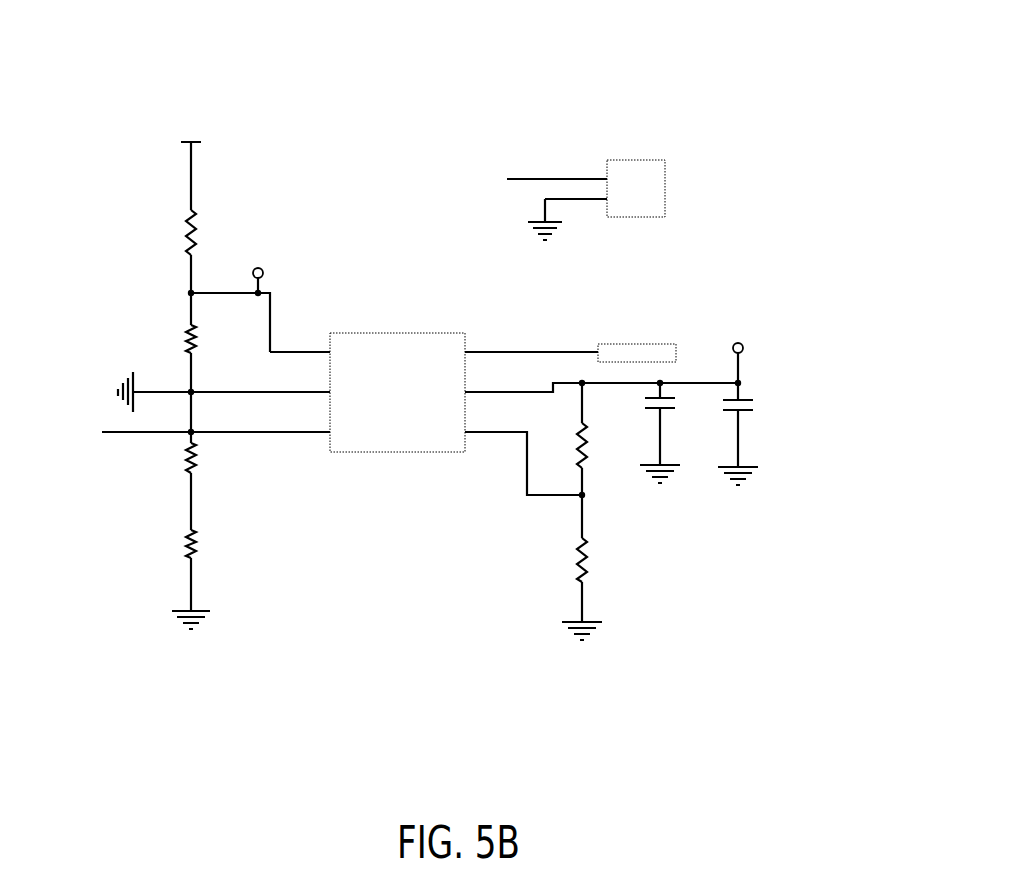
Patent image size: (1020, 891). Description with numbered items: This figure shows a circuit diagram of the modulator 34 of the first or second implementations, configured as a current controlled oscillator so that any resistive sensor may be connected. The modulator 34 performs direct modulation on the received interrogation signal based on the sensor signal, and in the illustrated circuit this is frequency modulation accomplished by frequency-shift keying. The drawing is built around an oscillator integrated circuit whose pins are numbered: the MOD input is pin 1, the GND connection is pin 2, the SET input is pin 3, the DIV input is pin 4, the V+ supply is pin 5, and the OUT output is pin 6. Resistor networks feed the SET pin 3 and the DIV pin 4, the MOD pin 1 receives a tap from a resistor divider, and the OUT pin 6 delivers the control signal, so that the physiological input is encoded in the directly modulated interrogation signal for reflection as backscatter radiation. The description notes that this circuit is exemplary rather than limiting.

The modulator 34 is at (617, 52).
The MOD pin of U1 1 is at (323, 348).
The GND pin of U1 2 is at (282, 388).
The SET pin of U1 3 is at (280, 428).
The DIV pin of U1 4 is at (506, 456).
The V+ pin of U1 5 is at (585, 388).
The OUT pin of U1 6 is at (510, 348).